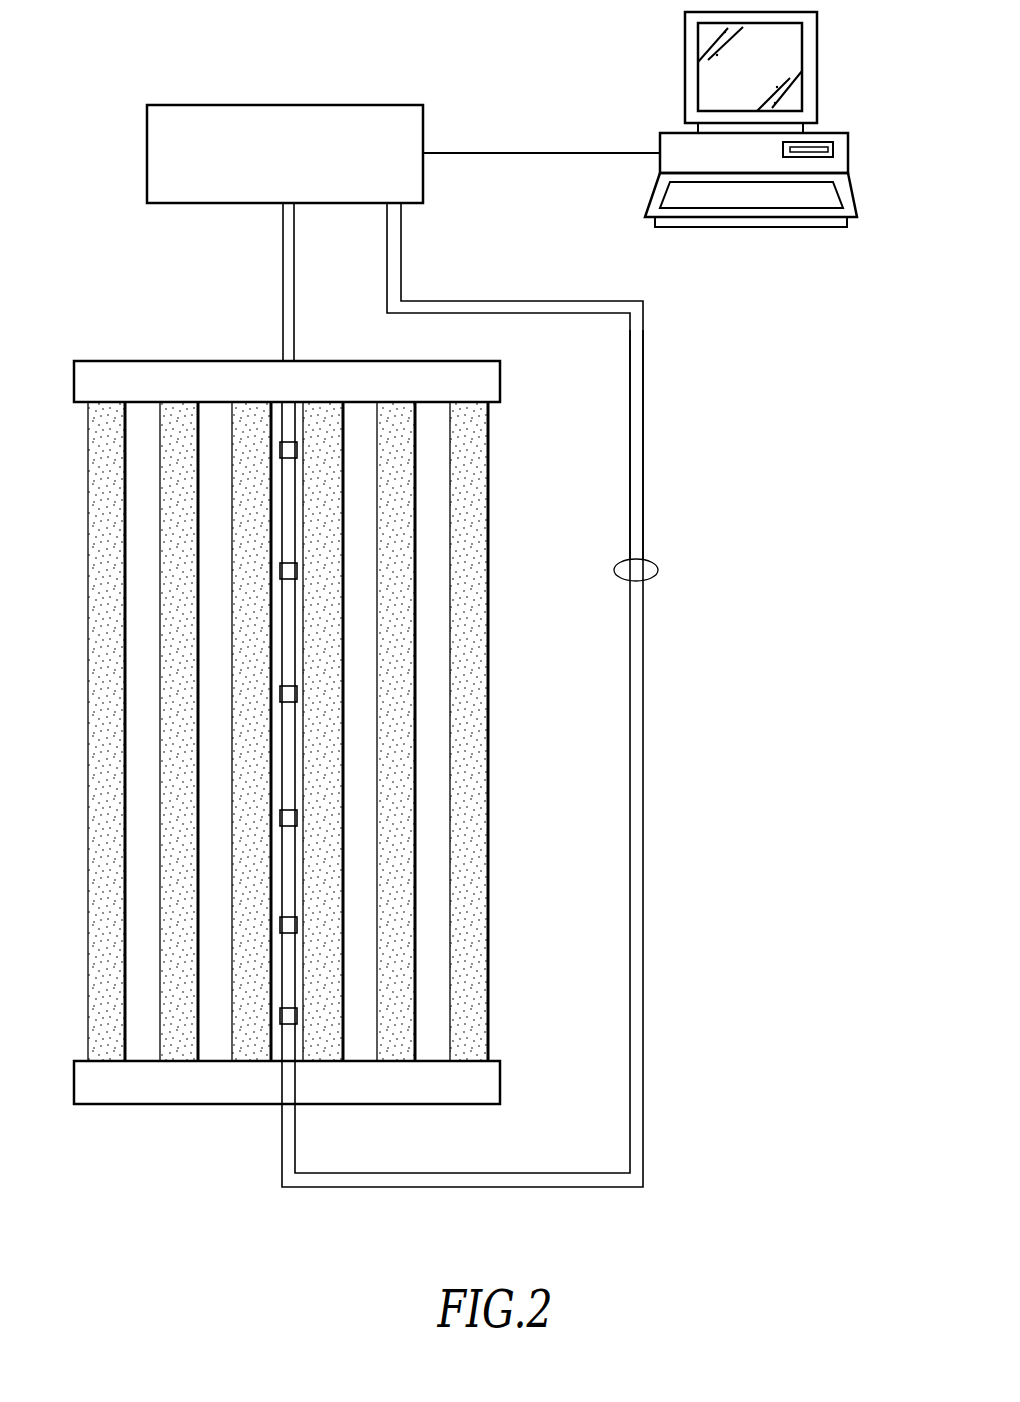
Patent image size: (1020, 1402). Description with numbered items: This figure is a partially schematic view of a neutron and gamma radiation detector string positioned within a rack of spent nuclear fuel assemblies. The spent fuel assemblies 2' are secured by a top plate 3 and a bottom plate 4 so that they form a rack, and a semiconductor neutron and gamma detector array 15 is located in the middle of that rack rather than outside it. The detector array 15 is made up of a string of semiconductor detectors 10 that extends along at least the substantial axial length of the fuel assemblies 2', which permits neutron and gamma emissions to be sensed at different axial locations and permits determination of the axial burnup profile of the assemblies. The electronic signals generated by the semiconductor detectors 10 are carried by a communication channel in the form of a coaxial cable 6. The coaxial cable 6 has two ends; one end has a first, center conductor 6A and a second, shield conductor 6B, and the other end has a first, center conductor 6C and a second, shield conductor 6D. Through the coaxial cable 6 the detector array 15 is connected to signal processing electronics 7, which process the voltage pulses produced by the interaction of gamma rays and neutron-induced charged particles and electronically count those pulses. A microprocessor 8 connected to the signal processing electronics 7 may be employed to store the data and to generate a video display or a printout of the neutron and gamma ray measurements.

The signal processing electronics 7 is at (178, 105).
The microprocessor 8 is at (843, 133).
The coaxial cable 6 is at (657, 565).
The first (center) conductor 6A is at (296, 258).
The second (shield) conductor 6B is at (282, 280).
The first (center) conductor 6C is at (387, 295).
The second (shield) conductor 6D is at (401, 270).
The top plate 3 is at (500, 382).
The bottom plate 4 is at (500, 1085).
The spent fuel assemblies 2' is at (289, 732).
The semiconductor detectors 10 is at (280, 450).
The semiconductor neutron and gamma detector array 15 is at (298, 694).